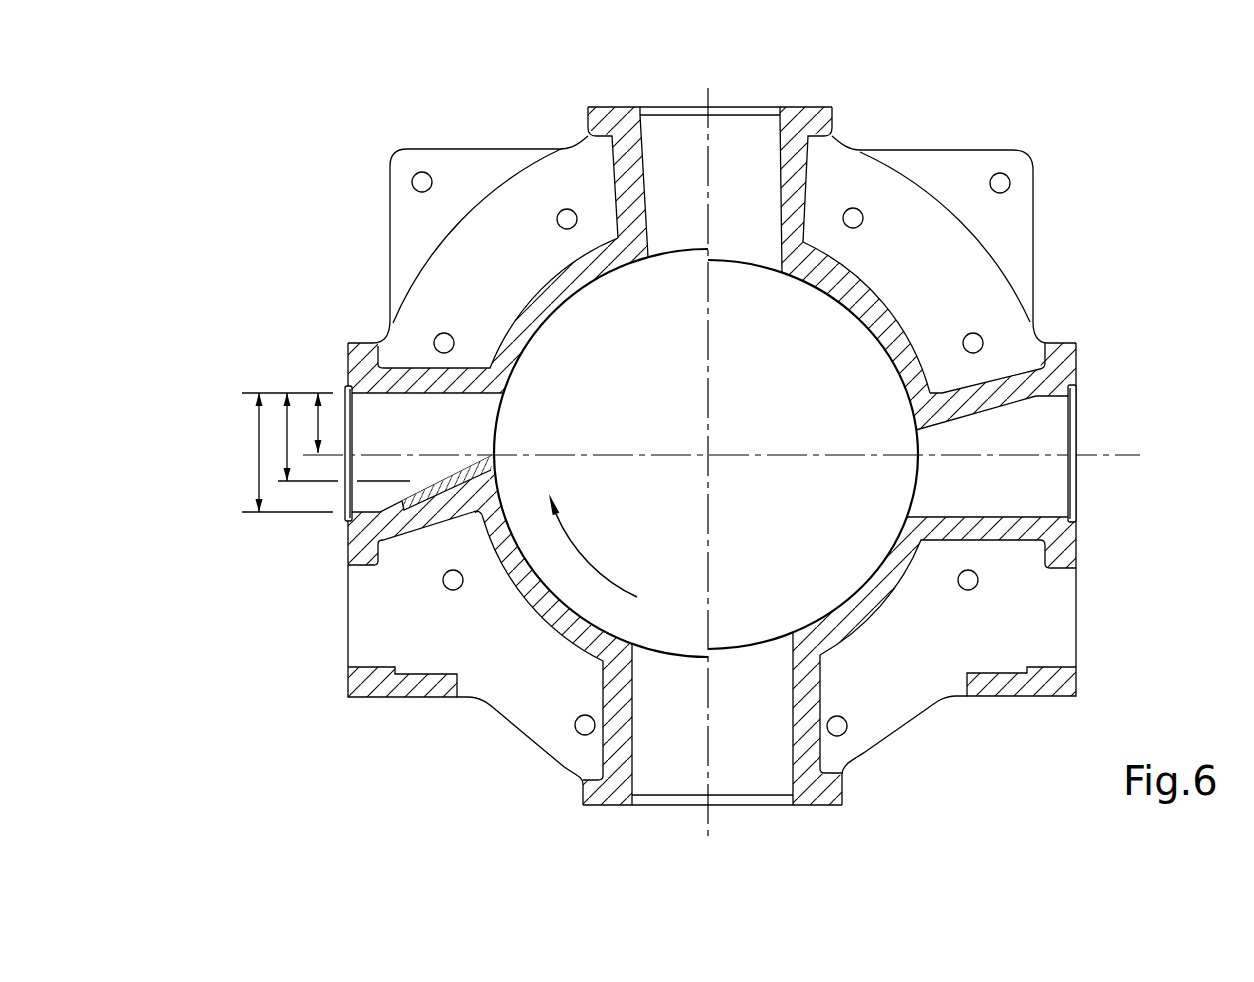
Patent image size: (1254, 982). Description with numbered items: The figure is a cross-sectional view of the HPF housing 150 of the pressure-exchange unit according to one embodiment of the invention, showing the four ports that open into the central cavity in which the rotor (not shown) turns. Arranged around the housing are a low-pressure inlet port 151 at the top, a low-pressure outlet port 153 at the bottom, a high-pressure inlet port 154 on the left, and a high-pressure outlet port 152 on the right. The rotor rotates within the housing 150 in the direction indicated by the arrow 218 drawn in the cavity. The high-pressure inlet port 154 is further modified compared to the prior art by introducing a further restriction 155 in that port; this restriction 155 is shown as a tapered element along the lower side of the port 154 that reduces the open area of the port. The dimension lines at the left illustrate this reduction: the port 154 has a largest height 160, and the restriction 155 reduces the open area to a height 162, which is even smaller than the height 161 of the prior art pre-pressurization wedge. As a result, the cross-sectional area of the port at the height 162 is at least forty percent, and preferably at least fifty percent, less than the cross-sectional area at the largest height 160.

The HPF housing 150 is at (1035, 207).
The low-pressure inlet port 151 is at (730, 106).
The high-pressure outlet port 152 is at (1082, 446).
The low-pressure outlet port 153 is at (680, 806).
The high-pressure inlet port 154 is at (348, 482).
The restriction 155 is at (474, 458).
The largest height 160 is at (258, 447).
The height of the prior art pre-pressurization wedge 161 is at (286, 427).
The restricted height 162 is at (322, 421).
The arrow 218 is at (569, 533).